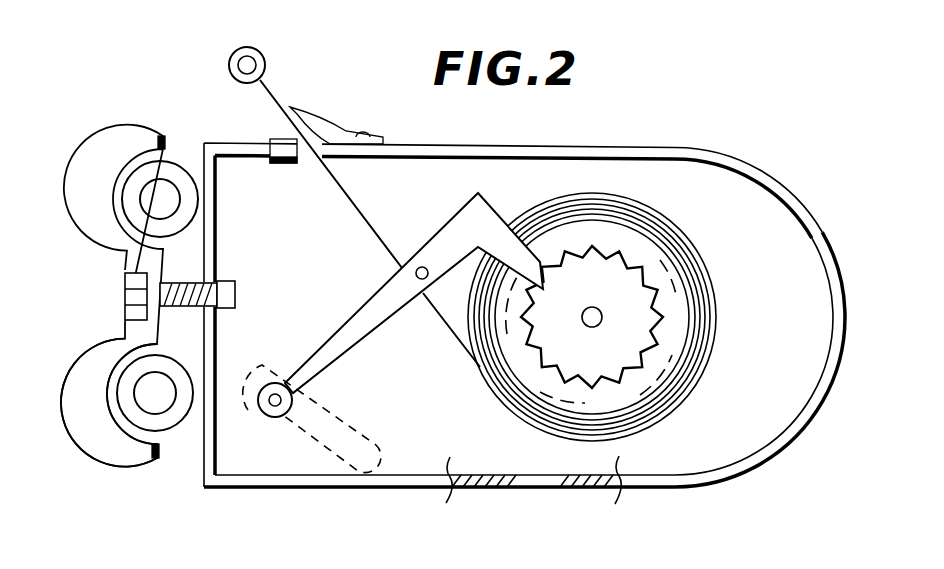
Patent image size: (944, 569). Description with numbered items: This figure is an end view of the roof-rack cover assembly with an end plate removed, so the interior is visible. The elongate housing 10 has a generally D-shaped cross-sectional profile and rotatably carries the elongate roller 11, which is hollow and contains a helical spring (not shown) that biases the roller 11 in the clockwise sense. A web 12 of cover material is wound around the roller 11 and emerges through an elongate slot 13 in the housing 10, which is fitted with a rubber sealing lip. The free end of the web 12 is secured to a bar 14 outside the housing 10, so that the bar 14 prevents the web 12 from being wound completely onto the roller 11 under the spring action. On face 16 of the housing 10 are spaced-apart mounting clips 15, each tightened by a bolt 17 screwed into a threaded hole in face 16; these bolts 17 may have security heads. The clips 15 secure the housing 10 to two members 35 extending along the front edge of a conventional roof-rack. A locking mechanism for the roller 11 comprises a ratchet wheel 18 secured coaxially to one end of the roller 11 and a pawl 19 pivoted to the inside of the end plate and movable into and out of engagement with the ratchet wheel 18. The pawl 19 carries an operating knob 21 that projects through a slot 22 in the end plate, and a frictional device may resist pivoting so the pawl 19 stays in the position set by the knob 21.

The housing 10 is at (777, 180).
The roller 11 is at (556, 214).
The web 12 is at (362, 213).
The slot 13 is at (297, 162).
The bar 14 is at (228, 65).
The mounting clips 15 is at (103, 195).
The face 16 is at (203, 457).
The bolt 17 is at (140, 302).
The ratchet wheel 18 is at (640, 327).
The pawl 19 is at (498, 242).
The operating knob 21 is at (276, 407).
The slot 22 is at (318, 432).
The members 35 is at (152, 168).